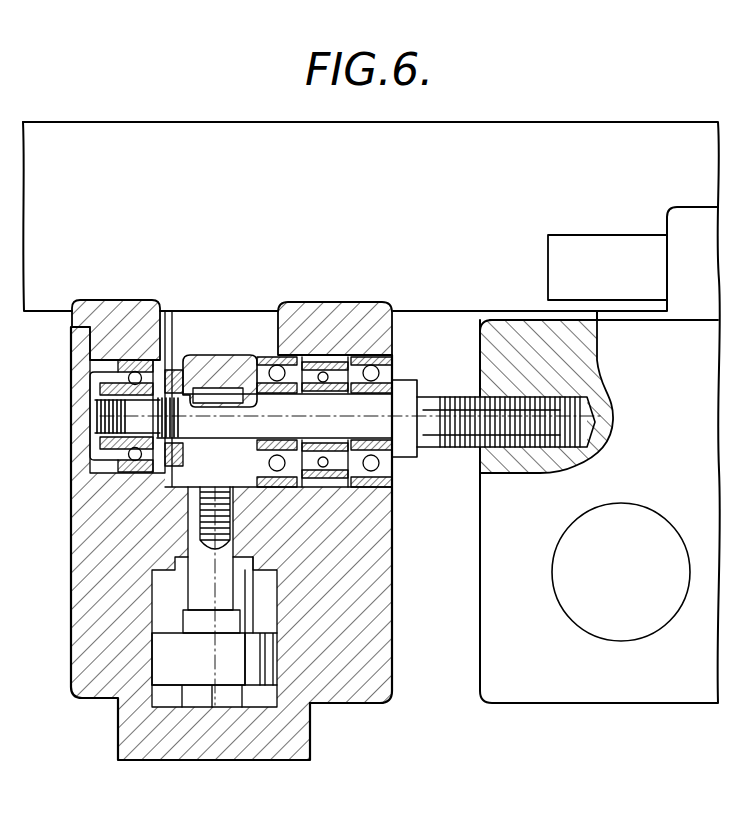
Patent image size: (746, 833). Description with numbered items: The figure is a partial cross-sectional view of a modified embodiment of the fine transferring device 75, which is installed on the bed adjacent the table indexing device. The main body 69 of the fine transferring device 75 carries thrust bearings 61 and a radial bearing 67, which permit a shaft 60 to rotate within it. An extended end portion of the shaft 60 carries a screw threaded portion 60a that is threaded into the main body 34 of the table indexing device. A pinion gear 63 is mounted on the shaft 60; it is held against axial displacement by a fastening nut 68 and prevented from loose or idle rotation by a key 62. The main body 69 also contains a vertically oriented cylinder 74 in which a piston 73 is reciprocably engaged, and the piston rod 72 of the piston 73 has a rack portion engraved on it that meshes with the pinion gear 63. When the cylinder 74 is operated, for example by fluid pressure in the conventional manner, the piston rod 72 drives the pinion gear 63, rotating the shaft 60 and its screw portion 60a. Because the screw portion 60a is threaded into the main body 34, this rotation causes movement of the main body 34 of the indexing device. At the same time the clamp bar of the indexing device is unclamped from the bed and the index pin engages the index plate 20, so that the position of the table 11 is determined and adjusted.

The table 11 is at (38, 297).
The index plate 20 is at (592, 256).
The main body of the table indexing device 34 is at (518, 332).
The shaft 60 is at (363, 418).
The screw threaded portion 60a is at (454, 402).
The thrust bearings 61 is at (293, 355).
The key 62 is at (204, 388).
The pinion gear 63 is at (222, 372).
The radial bearing 67 is at (333, 484).
The fastening nut 68 is at (166, 357).
The main body 69 is at (362, 556).
The piston rod 72 is at (203, 585).
The piston 73 is at (177, 664).
The cylinder 74 is at (268, 697).
The fine transferring device 75 is at (360, 703).